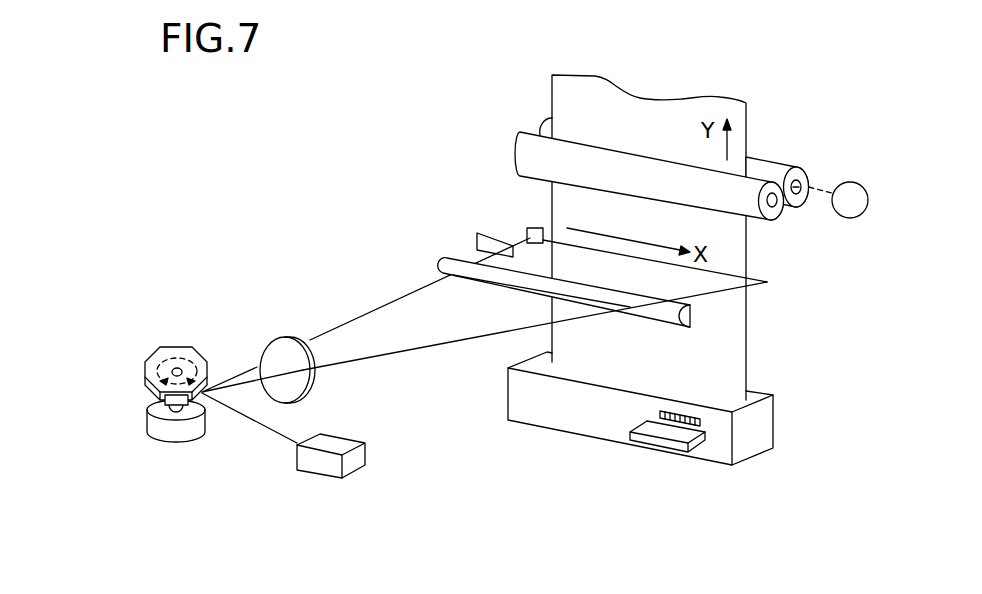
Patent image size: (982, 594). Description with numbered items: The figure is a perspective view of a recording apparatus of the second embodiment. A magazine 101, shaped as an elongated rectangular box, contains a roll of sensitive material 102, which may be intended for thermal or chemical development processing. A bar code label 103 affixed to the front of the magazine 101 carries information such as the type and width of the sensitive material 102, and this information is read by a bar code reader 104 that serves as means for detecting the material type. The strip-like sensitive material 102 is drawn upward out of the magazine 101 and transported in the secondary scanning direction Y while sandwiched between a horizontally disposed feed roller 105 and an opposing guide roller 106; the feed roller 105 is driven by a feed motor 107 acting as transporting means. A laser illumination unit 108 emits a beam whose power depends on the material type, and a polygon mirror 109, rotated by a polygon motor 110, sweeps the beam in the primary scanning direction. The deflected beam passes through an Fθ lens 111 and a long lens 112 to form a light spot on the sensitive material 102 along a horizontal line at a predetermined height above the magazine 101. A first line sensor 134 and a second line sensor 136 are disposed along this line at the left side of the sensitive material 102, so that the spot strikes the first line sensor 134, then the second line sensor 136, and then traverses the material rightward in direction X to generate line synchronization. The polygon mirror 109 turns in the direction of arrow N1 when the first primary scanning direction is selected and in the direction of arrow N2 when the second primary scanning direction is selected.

The magazine 101 is at (768, 437).
The sensitive material 102 is at (738, 360).
The bar code label 103 is at (654, 414).
The bar code reader 104 is at (656, 444).
The feed roller 105 is at (780, 167).
The guide roller 106 is at (740, 187).
The feed motor 107 is at (847, 220).
The laser illumination unit 108 is at (365, 455).
The polygon mirror 109 is at (176, 347).
The polygon motor 110 is at (178, 443).
The Fθ lens 111 is at (284, 337).
The long lens 112 is at (437, 265).
The first line sensor 134 is at (477, 240).
The second line sensor 136 is at (530, 232).
The arrow N1 is at (193, 350).
The arrow N2 is at (145, 370).